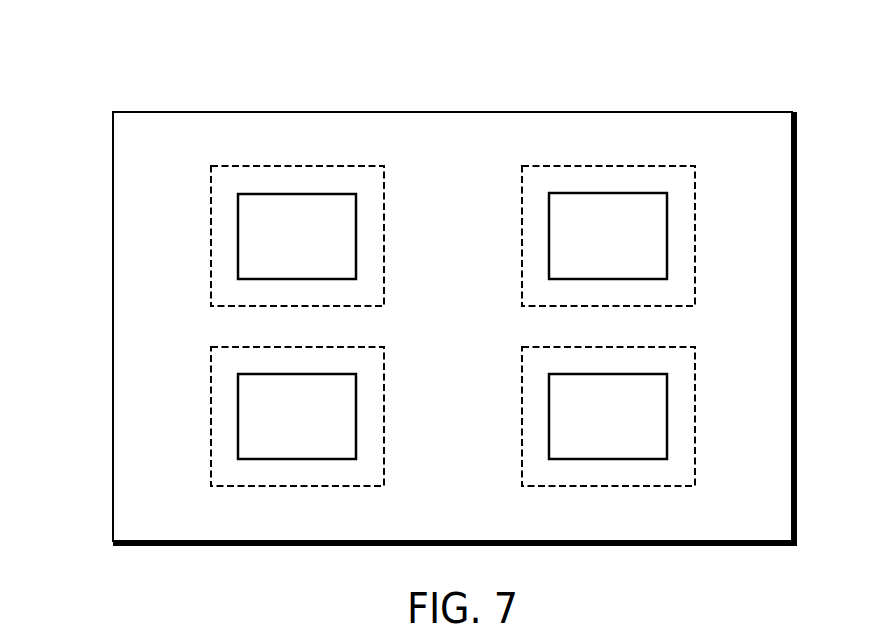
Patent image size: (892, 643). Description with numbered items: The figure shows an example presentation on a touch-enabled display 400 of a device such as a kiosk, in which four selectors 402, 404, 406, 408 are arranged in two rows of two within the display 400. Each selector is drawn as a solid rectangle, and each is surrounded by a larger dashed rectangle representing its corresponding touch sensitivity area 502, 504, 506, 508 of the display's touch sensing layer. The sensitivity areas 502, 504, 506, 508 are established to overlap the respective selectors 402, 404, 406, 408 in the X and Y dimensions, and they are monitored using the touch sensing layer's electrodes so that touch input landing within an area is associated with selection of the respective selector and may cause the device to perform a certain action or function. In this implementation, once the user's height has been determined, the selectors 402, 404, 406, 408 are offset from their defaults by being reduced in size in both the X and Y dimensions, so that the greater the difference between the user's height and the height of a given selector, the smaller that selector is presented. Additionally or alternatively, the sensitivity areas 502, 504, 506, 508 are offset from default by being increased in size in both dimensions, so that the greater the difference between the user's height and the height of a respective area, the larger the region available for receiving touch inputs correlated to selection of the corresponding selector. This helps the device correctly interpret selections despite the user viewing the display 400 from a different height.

The touch-enabled display 400 is at (132, 42).
The selector 402 is at (238, 236).
The selector 404 is at (549, 236).
The selector 406 is at (238, 416).
The selector 408 is at (549, 416).
The touch sensitivity area 502 is at (385, 178).
The touch sensitivity area 504 is at (696, 237).
The touch sensitivity area 506 is at (385, 357).
The touch sensitivity area 508 is at (696, 417).